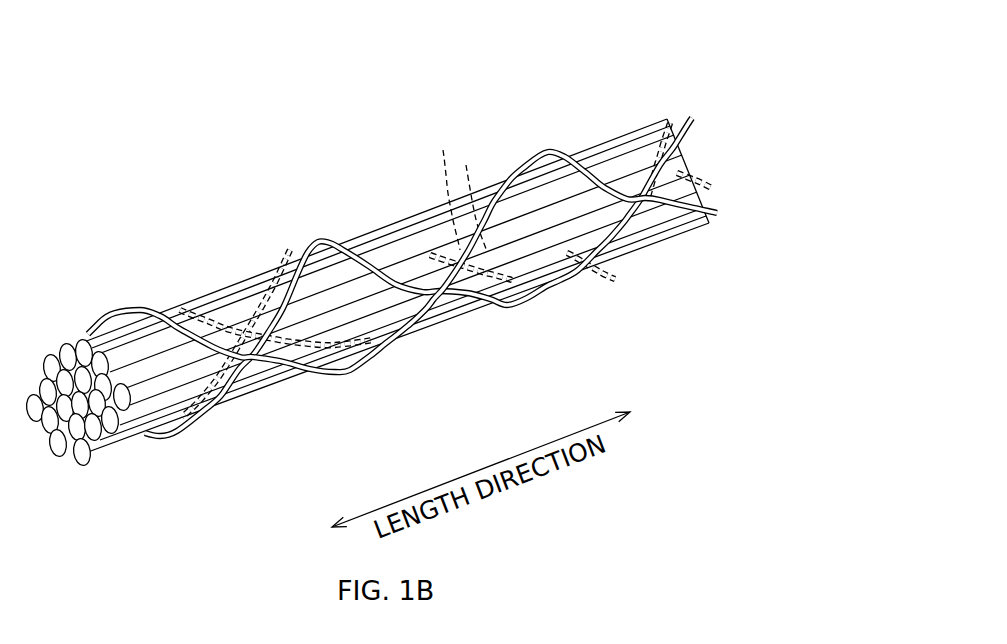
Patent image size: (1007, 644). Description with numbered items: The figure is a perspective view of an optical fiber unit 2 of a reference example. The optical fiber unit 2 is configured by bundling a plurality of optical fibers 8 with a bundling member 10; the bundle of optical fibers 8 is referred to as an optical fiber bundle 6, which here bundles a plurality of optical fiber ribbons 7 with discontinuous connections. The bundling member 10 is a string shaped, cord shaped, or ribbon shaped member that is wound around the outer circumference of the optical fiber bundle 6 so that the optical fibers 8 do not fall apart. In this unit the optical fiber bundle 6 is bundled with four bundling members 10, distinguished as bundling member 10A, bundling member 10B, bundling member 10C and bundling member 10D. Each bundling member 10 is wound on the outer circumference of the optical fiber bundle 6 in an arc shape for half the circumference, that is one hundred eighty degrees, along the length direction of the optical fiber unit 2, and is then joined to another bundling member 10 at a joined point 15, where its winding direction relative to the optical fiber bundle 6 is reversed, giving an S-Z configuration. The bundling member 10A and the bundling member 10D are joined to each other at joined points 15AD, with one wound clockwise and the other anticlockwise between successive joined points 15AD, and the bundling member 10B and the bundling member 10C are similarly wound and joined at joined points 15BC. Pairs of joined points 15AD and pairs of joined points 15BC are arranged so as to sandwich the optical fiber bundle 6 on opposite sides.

The optical fiber unit 2 is at (130, 214).
The optical fiber bundle 6 is at (365, 296).
The optical fiber ribbon 7 is at (78, 380).
The optical fiber 8 is at (80, 427).
The bundling member 10 is at (387, 285).
The bundling member 10A is at (117, 310).
The bundling member 10B is at (310, 243).
The bundling member 10C is at (523, 297).
The bundling member 10D is at (347, 370).
The joined point 15 is at (446, 256).
The joined point 15AD is at (452, 240).
The joined point 15BC is at (628, 148).